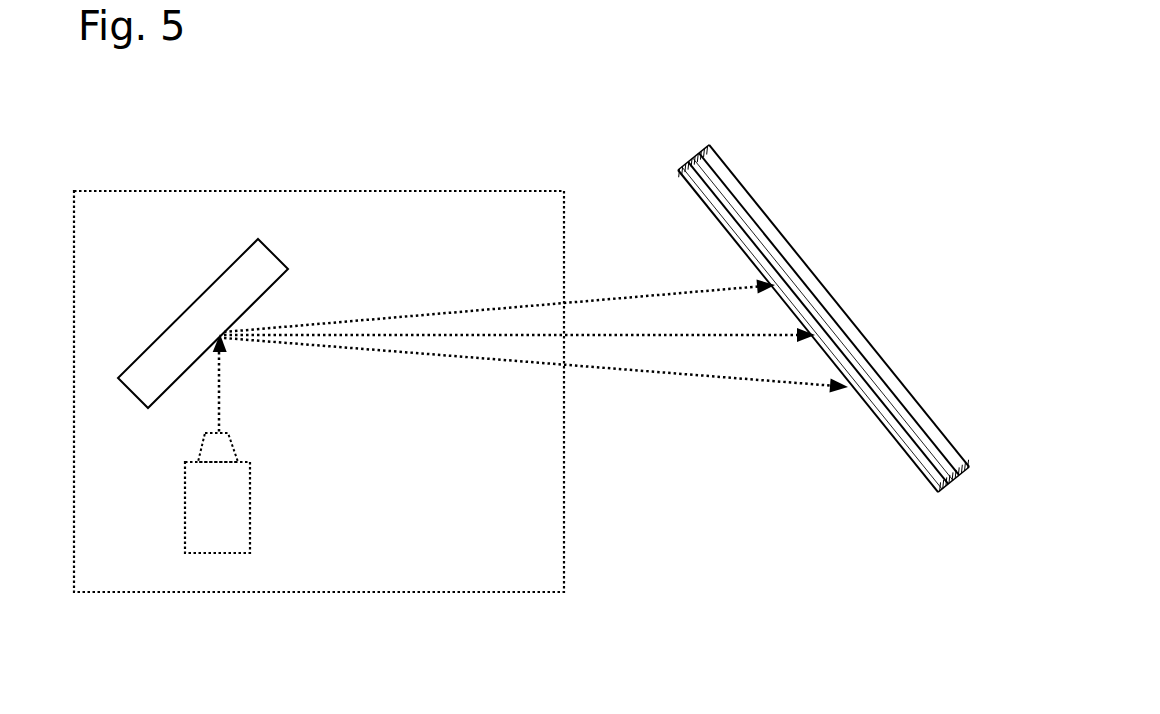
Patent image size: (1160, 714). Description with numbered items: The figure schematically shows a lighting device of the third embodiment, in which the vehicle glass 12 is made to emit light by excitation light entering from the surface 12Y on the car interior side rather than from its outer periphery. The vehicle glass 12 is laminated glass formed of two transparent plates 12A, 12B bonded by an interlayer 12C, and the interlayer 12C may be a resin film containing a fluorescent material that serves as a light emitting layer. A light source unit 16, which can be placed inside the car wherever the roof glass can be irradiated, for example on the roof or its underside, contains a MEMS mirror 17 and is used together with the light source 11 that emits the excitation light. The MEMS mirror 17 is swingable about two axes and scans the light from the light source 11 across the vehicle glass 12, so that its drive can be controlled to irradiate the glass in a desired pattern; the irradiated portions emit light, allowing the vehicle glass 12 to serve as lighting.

The light source 11 is at (243, 490).
The vehicle glass 12 is at (786, 311).
The transparent plate 12A is at (678, 168).
The transparent plate 12B is at (727, 162).
The interlayer 12C is at (940, 462).
The surface on the car interior side 12Y is at (892, 448).
The light source unit 16 is at (379, 181).
The MEMS mirror 17 is at (214, 290).